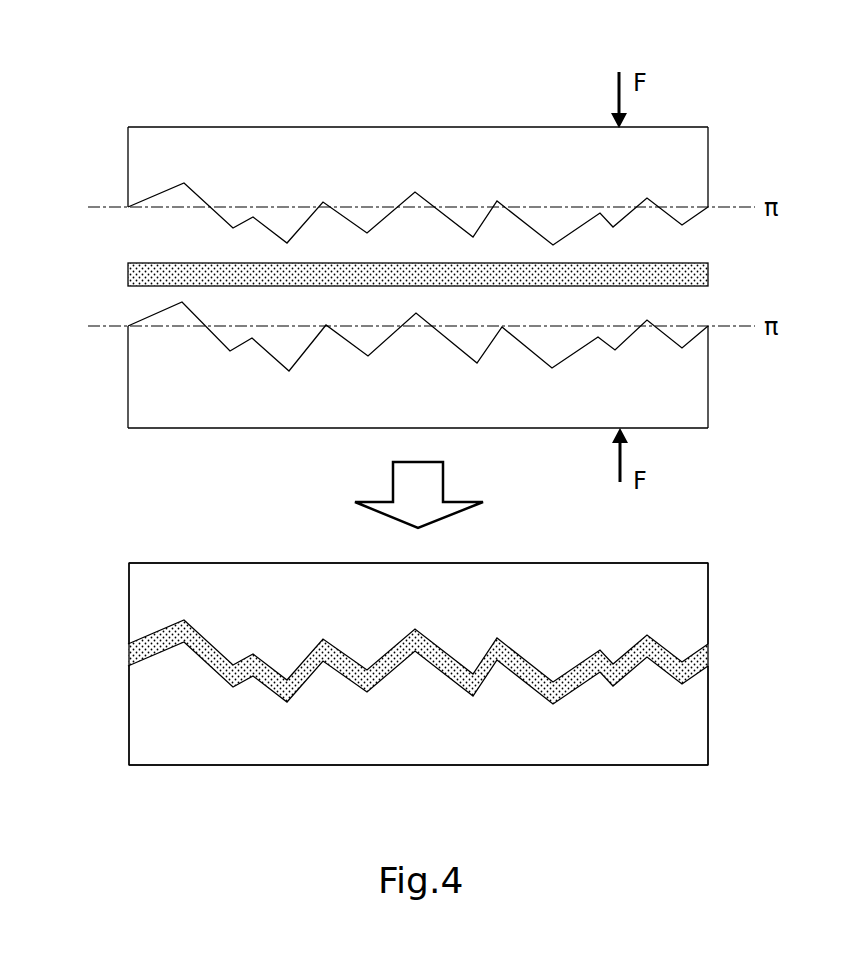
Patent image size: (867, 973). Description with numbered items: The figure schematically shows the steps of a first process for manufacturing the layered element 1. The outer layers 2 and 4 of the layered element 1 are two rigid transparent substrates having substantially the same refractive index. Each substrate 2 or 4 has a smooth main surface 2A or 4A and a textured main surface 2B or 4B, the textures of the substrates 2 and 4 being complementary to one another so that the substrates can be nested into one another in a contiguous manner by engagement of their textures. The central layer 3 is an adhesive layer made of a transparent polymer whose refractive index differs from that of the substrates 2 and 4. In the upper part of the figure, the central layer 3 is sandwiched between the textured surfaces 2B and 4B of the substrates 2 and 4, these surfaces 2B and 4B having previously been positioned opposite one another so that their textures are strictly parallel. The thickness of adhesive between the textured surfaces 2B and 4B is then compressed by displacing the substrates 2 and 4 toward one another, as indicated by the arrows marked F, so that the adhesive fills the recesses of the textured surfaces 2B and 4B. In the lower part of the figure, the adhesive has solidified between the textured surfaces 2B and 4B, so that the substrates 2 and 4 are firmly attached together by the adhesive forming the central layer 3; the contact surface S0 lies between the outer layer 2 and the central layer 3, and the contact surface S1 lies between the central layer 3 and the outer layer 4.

The layered element 1 is at (159, 830).
The outer layer 2 is at (695, 378).
The smooth main surface 2A is at (163, 433).
The textured main surface 2B is at (130, 322).
The central layer 3 is at (703, 273).
The outer layer 4 is at (693, 150).
The smooth main surface 4A is at (157, 124).
The textured main surface 4B is at (148, 205).
The contact surface S1 is at (128, 645).
The contact surface S0 is at (128, 663).